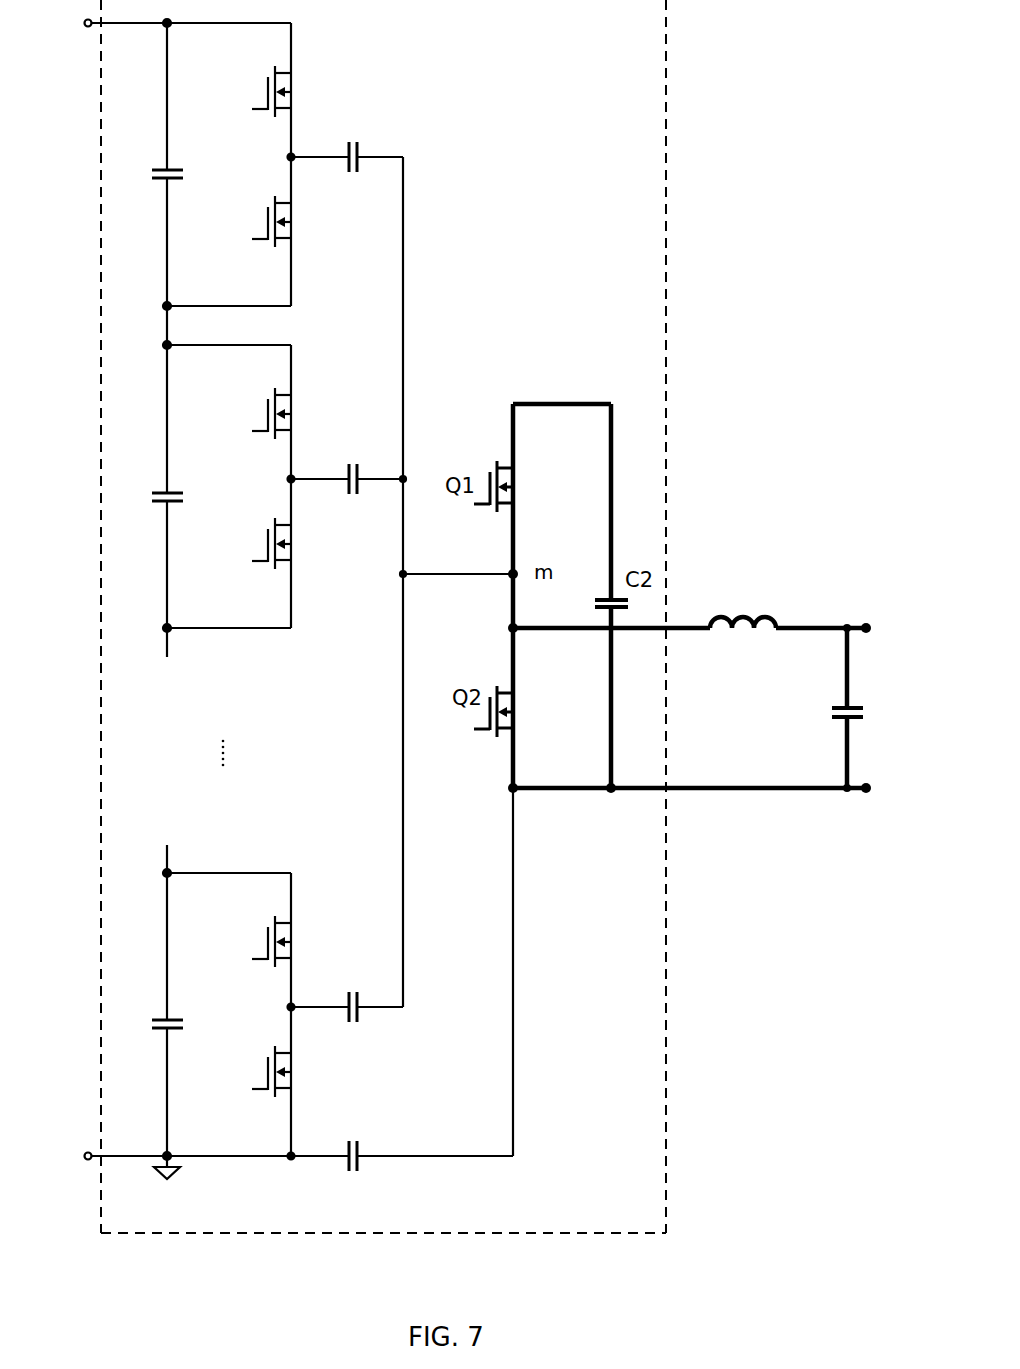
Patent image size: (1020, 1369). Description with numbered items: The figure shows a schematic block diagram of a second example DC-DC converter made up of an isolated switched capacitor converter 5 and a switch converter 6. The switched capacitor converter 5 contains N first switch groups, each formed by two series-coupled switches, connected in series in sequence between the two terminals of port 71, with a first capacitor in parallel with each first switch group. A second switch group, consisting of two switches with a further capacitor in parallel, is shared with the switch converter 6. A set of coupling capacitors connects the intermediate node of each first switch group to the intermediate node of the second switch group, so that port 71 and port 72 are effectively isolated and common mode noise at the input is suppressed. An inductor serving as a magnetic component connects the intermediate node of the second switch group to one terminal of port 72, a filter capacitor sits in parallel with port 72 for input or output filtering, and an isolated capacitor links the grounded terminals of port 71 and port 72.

The isolated switched capacitor converter 5 is at (667, 227).
The switch converter 6 is at (824, 658).
The port 71 is at (77, 662).
The port 72 is at (876, 748).